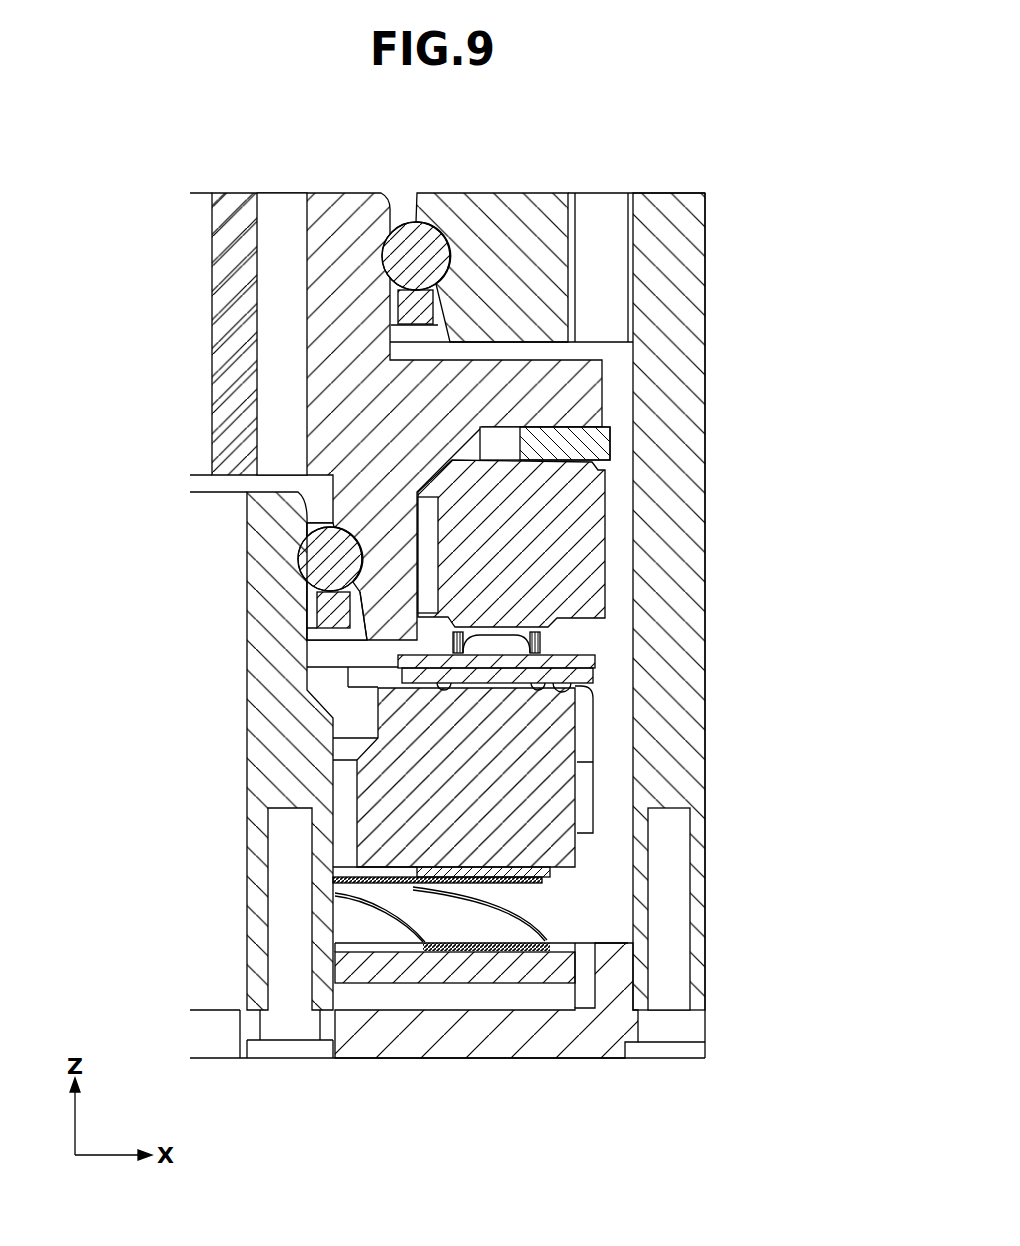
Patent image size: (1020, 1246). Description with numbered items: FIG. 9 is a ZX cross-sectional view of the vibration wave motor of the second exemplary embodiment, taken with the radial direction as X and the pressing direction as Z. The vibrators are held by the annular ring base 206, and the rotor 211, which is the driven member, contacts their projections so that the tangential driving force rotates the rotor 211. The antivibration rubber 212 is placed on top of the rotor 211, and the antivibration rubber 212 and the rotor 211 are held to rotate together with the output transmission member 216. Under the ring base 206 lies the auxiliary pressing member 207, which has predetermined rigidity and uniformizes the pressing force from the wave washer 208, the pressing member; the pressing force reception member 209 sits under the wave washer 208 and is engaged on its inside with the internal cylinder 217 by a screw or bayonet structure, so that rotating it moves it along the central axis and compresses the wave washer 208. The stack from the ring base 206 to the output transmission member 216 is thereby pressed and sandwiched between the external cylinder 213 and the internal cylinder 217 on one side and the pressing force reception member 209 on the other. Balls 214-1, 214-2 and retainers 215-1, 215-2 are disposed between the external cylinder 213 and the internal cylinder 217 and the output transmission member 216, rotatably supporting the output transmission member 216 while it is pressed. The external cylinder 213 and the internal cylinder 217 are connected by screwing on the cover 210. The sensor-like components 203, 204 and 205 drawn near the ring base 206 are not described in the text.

The image sensor 203 is at (593, 656).
The sensor substrate 204 is at (593, 672).
The holder 205 is at (598, 738).
The ring base 206 is at (545, 808).
The auxiliary pressing member 207 is at (545, 882).
The wave washer 208 is at (548, 920).
The pressing force reception member 209 is at (518, 968).
The cover 210 is at (485, 1048).
The rotor 211 is at (590, 542).
The antivibration rubber 212 is at (585, 437).
The external cylinder 213 is at (690, 247).
The ball 214-1 is at (423, 246).
The ball 214-2 is at (318, 548).
The retainer 215-1 is at (427, 310).
The retainer 215-2 is at (330, 611).
The output transmission member 216 is at (222, 302).
The internal cylinder 217 is at (262, 763).